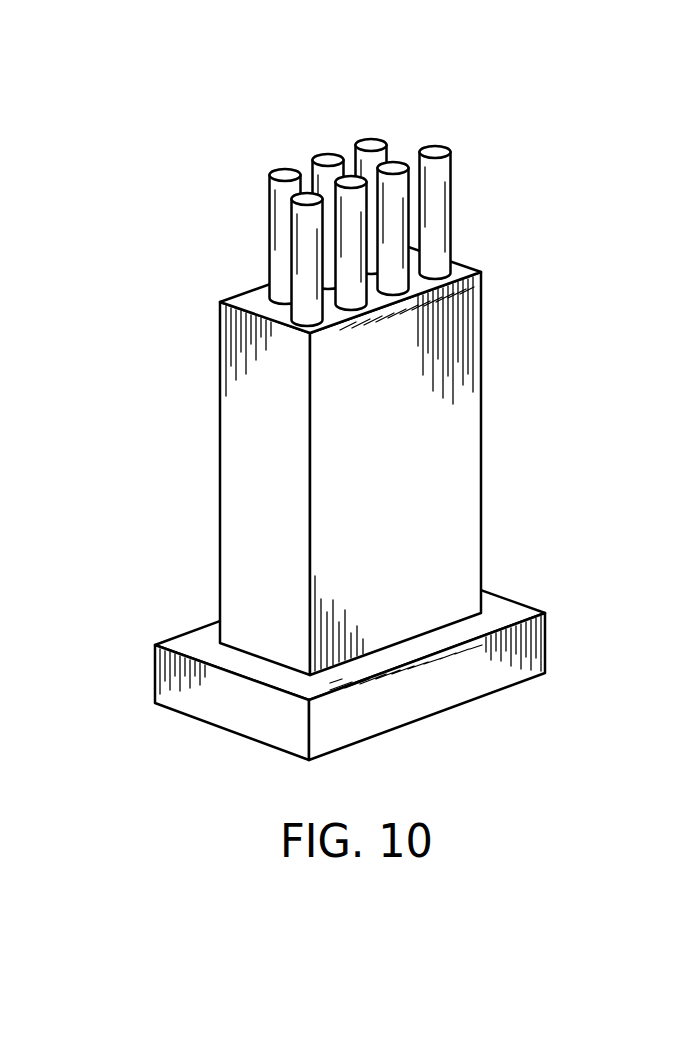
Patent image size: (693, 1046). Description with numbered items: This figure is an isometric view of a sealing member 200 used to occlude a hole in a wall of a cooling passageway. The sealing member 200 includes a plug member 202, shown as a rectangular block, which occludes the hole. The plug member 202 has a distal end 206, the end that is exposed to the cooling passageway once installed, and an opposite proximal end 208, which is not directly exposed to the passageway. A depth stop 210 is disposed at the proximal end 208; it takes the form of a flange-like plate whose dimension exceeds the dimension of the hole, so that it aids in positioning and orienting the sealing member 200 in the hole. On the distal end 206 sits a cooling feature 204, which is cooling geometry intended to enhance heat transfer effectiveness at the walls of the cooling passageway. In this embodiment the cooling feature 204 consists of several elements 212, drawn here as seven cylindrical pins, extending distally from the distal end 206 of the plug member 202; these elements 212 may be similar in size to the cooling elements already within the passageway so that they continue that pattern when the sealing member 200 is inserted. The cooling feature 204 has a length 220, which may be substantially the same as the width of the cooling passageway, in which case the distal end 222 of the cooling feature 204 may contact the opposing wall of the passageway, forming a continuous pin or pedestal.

The sealing member 200 is at (348, 403).
The plug member 202 is at (419, 457).
The cooling feature 204 is at (228, 236).
The distal end 206 is at (504, 278).
The proximal end 208 is at (520, 579).
The depth stop 210 is at (384, 651).
The element 212 is at (280, 275).
The length 220 is at (375, 186).
The distal end of cooling feature 222 is at (470, 273).